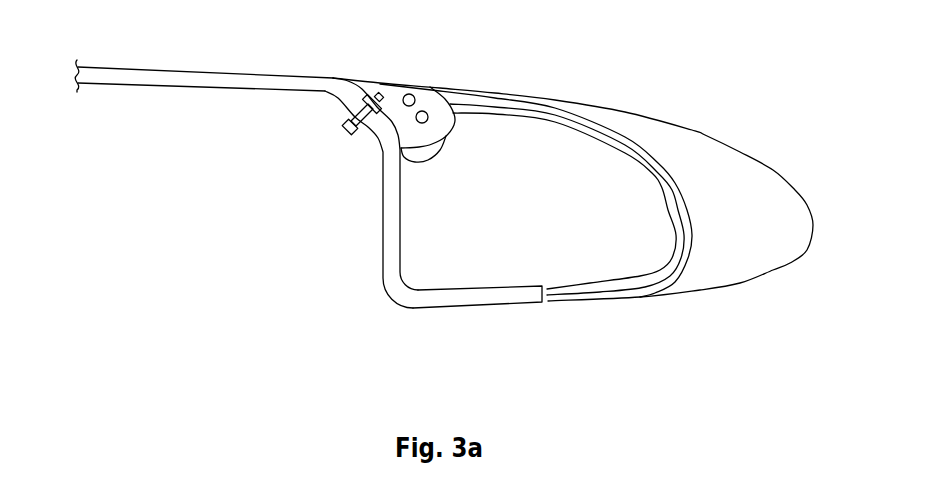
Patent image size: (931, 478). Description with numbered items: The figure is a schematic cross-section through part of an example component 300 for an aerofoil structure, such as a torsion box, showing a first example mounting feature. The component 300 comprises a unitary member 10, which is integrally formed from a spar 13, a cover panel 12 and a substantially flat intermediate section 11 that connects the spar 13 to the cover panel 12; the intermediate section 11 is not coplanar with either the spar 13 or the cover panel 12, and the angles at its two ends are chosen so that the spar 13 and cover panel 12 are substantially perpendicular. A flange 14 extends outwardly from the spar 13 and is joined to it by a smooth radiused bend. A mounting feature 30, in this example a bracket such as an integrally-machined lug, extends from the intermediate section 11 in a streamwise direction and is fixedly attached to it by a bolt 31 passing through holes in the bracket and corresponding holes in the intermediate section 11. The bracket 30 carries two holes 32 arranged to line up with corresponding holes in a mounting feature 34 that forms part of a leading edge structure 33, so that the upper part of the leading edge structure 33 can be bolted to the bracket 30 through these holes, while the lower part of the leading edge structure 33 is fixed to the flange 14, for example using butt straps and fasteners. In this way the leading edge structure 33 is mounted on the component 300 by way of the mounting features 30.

The unitary member 10 is at (444, 198).
The intermediate section 11 is at (322, 102).
The cover panel 12 is at (188, 82).
The spar 13 is at (383, 215).
The flange 14 is at (455, 293).
The mounting feature 30 is at (439, 86).
The bolt 31 is at (361, 103).
The holes 32 is at (419, 110).
The leading edge structure 33 is at (741, 105).
The mounting feature 34 is at (448, 97).
The component 300 is at (444, 198).